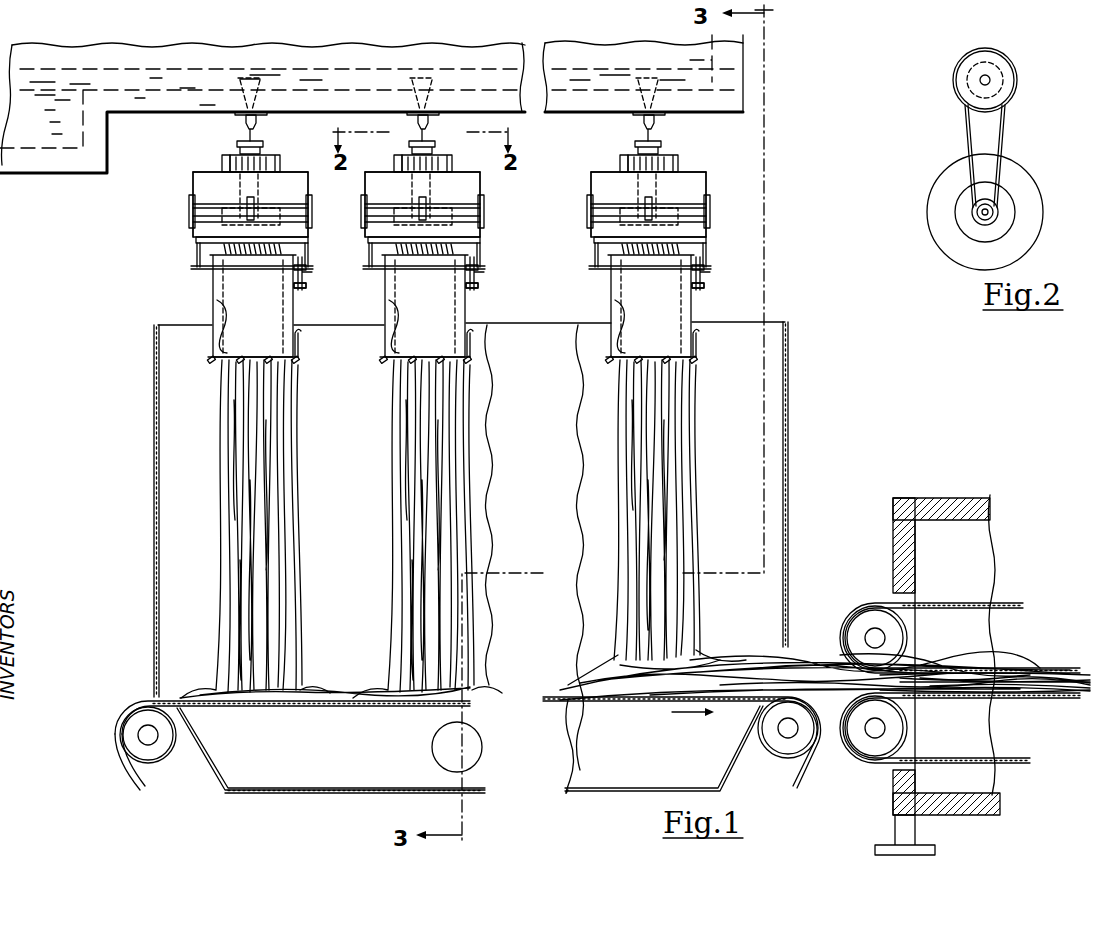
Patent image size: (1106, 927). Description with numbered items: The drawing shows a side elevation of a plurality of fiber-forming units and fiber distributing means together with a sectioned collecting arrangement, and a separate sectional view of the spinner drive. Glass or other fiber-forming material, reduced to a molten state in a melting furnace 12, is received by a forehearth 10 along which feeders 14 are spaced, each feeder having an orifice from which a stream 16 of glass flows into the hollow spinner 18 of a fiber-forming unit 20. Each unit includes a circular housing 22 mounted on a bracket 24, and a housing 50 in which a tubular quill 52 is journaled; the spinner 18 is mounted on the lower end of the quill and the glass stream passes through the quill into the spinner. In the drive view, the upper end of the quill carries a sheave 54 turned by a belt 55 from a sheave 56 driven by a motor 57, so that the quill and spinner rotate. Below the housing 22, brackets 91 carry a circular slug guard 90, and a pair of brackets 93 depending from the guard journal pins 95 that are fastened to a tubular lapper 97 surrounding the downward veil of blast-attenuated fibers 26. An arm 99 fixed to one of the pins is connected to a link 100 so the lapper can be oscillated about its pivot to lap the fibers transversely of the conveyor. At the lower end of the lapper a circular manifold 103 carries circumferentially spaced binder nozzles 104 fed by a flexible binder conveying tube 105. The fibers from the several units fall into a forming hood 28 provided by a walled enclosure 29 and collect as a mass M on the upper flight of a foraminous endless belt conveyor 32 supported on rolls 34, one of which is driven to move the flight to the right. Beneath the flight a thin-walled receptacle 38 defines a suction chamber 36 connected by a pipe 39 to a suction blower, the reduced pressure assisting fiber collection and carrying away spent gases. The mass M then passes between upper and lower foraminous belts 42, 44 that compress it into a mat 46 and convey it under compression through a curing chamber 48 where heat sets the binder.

In FIG. 1, the forehearth 10 is at (718, 110).
In FIG. 1, the melting furnace 12 is at (49, 173).
In FIG. 1, the feeders 14 is at (236, 113).
In FIG. 1, the stream of glass 16 is at (248, 126).
In FIG. 1, the spinner 18 is at (267, 208).
In FIG. 1, the fiber-forming unit 20 is at (186, 168).
In FIG. 2, the fiber-forming unit 20 is at (1013, 162).
In FIG. 1, the circular housing 22 is at (192, 173).
In FIG. 1, the bracket 24 is at (222, 152).
In FIG. 1, the blast-attenuated fibers 26 is at (222, 397).
In FIG. 1, the forming hood 28 is at (737, 432).
In FIG. 1, the walled enclosure 29 is at (788, 375).
In FIG. 1, the endless belt conveyor 32 is at (163, 695).
In FIG. 1, the rolls 34 is at (165, 764).
In FIG. 1, the suction chamber 36 is at (353, 749).
In FIG. 1, the thin-walled receptacle 38 is at (224, 790).
In FIG. 1, the pipe 39 is at (435, 754).
In FIG. 1, the upper foraminous belt 42 is at (1006, 665).
In FIG. 1, the lower foraminous belt 44 is at (1013, 698).
In FIG. 1, the mat 46 is at (1082, 668).
In FIG. 1, the curing chamber 48 is at (968, 557).
In FIG. 1, the housing 50 is at (282, 165).
In FIG. 1, the quill 52 is at (245, 185).
In FIG. 1, the sheave 54 is at (262, 143).
In FIG. 2, the sheave 54 is at (998, 208).
In FIG. 2, the belt 55 is at (1005, 123).
In FIG. 2, the sheave 56 is at (995, 78).
In FIG. 2, the motor 57 is at (983, 48).
In FIG. 1, the slug guard 90 is at (193, 223).
In FIG. 1, the brackets 91 is at (189, 200).
In FIG. 1, the brackets 93 is at (196, 240).
In FIG. 1, the pins 95 is at (197, 264).
In FIG. 1, the lapper 97 is at (213, 286).
In FIG. 1, the arm 99 is at (297, 277).
In FIG. 1, the link 100 is at (304, 288).
In FIG. 1, the manifold 103 is at (215, 300).
In FIG. 1, the binder nozzles 104 is at (210, 356).
In FIG. 1, the binder conveying tube 105 is at (299, 340).
In FIG. 1, the mass of fibers M is at (756, 659).